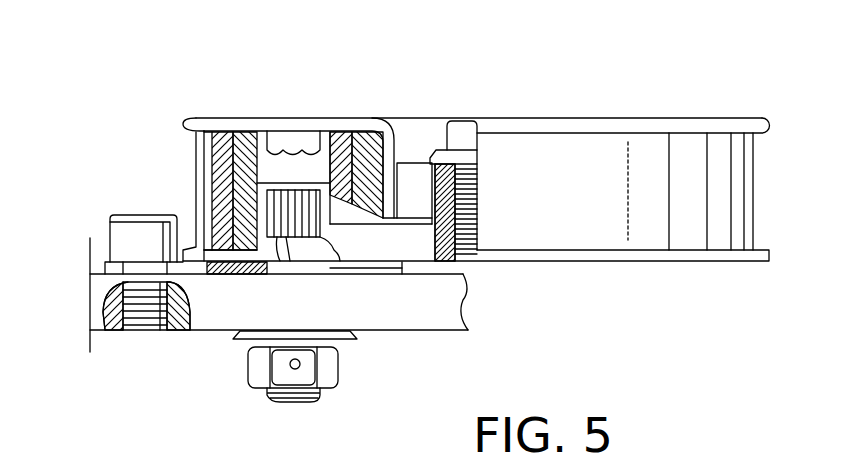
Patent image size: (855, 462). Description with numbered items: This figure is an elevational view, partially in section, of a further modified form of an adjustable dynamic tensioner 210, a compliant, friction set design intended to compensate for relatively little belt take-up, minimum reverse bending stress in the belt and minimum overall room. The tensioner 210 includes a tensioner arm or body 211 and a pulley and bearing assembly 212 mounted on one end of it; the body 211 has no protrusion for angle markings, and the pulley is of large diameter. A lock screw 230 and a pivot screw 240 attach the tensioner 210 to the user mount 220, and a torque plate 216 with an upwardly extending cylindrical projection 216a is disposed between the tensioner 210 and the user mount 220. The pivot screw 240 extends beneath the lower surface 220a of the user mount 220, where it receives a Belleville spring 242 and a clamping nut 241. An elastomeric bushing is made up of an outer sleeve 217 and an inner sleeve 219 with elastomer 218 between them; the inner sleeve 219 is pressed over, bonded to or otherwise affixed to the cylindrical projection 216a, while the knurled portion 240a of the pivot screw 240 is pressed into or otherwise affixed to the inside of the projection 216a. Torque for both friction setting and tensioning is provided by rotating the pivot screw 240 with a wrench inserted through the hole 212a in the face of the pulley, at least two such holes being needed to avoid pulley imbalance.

The tensioner 210 is at (404, 92).
The tensioner arm or body 211 is at (402, 240).
The pulley and bearing assembly 212 is at (610, 122).
The hole 212a is at (303, 117).
The torque plate 216 is at (105, 268).
The cylindrical projection 216a is at (258, 208).
The outer sleeve 217 is at (244, 130).
The elastomer 218 is at (238, 122).
The inner sleeve 219 is at (343, 130).
The user mount 220 is at (452, 300).
The lower surface 220a is at (200, 330).
The lock screw 230 is at (145, 213).
The pivot screw 240 is at (283, 127).
The knurled portion 240a is at (278, 233).
The clamping nut 241 is at (330, 372).
The Belleville spring 242 is at (353, 340).